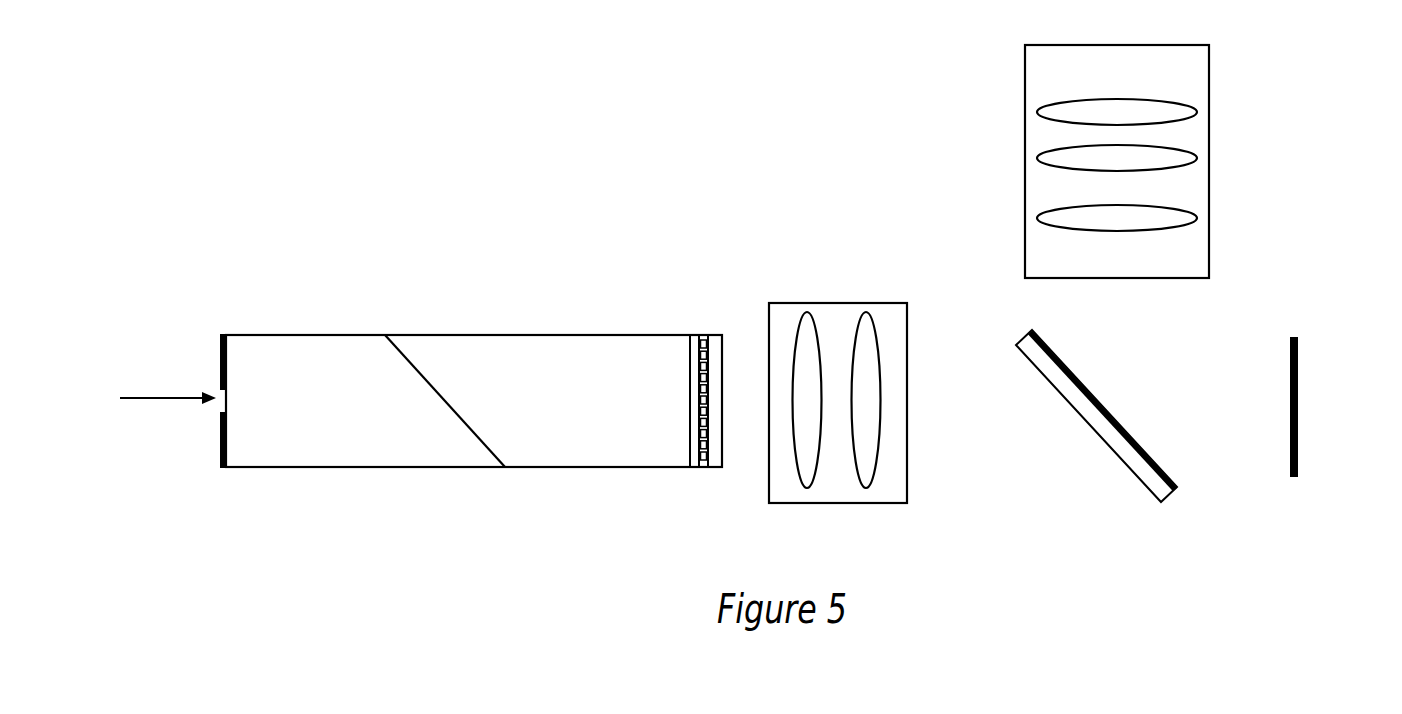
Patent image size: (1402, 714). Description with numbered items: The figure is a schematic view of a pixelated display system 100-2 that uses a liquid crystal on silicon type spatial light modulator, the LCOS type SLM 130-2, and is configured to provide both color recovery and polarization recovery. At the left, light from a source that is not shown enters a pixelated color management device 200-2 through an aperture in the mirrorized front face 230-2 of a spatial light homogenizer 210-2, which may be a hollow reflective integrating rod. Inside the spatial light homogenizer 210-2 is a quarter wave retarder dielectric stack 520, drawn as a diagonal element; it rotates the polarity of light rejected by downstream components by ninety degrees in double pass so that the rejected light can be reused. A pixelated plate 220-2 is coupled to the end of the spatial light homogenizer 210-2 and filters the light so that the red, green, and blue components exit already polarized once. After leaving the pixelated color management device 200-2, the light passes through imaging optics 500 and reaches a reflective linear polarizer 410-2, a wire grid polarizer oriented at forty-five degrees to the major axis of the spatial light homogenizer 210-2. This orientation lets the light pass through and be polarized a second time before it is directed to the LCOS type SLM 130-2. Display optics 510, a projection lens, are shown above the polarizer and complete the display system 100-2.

The display system 100-2 is at (132, 128).
The pixelated color management device 200-2 is at (393, 245).
The spatial light homogenizer 210-2 is at (401, 476).
The pixelated plate 220-2 is at (702, 334).
The mirrorized front face 230-2 is at (208, 361).
The quarter wave retarder dielectric stack 520 is at (461, 398).
The imaging optics 500 is at (836, 303).
The display optics 510 is at (1025, 173).
The reflective linear polarizer 410-2 is at (1112, 410).
The LCOS type SLM 130-2 is at (1298, 403).